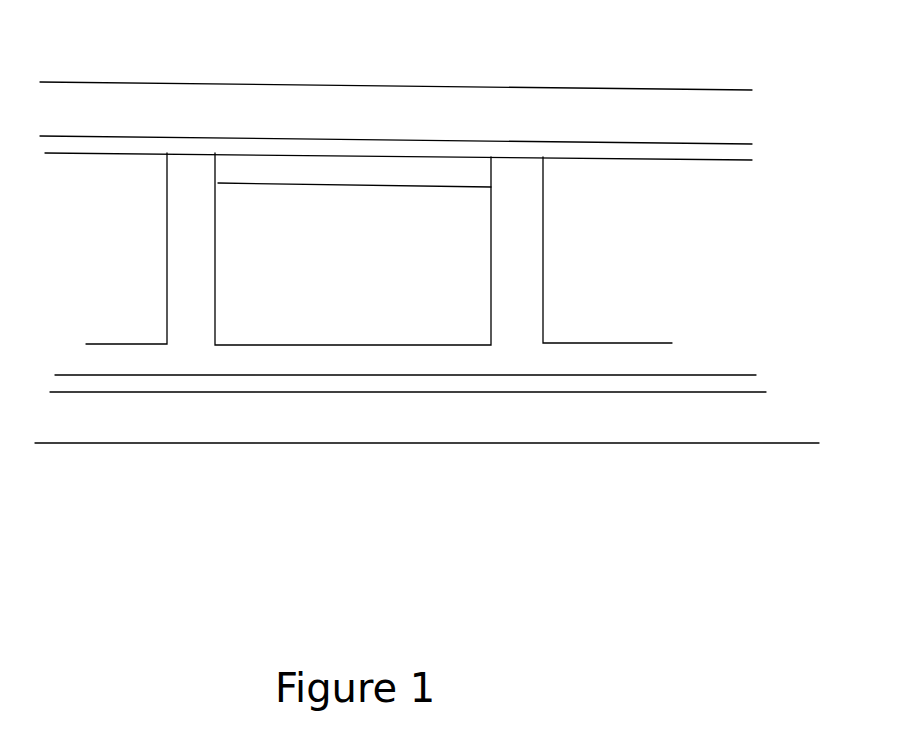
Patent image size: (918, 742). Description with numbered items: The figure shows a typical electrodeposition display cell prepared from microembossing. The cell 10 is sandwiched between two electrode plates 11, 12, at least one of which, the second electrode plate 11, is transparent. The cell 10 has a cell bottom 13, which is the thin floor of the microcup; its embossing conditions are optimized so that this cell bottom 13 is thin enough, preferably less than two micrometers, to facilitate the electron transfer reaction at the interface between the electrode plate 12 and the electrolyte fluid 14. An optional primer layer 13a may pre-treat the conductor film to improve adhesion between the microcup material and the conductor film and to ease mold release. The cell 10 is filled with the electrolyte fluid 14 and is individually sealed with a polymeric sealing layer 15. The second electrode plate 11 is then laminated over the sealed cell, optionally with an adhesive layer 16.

The cell 10 is at (601, 252).
The transparent electrode plate 11 is at (674, 107).
The electrode plate 12 is at (657, 415).
The cell bottom 13 is at (421, 357).
The primer layer 13a is at (549, 387).
The electrolyte fluid 14 is at (247, 253).
The polymeric sealing layer 15 is at (300, 175).
The adhesive layer 16 is at (445, 157).